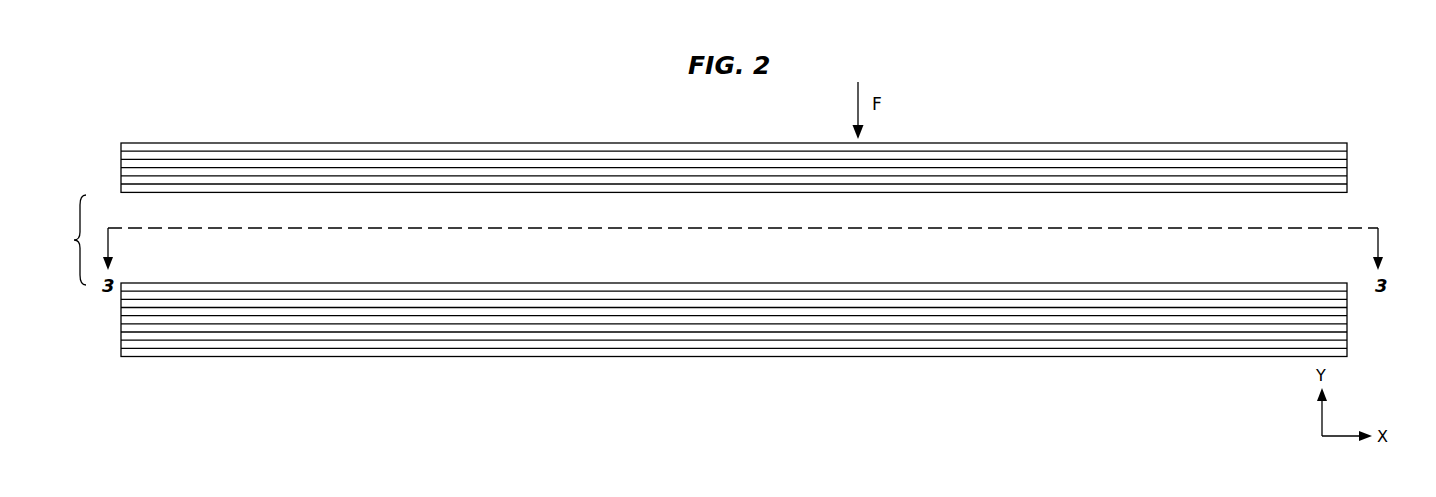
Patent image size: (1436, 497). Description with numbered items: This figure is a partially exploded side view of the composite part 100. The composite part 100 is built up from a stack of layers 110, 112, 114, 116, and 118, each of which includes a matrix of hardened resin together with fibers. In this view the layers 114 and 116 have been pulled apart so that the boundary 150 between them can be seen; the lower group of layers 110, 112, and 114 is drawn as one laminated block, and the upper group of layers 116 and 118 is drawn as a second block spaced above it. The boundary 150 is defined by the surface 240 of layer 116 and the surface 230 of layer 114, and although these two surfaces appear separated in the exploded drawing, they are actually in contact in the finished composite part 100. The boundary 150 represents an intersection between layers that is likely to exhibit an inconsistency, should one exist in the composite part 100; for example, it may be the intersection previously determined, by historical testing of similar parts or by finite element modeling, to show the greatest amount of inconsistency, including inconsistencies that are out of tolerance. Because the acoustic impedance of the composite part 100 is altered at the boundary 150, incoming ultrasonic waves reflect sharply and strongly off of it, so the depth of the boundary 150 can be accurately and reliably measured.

The composite part 100 is at (720, 261).
The layer 110 is at (121, 345).
The layer 112 is at (121, 322).
The layer 114 is at (121, 296).
The layer 116 is at (1347, 180).
The layer 118 is at (1347, 155).
The boundary 150 is at (712, 240).
The surface 230 is at (700, 323).
The surface 240 is at (759, 167).